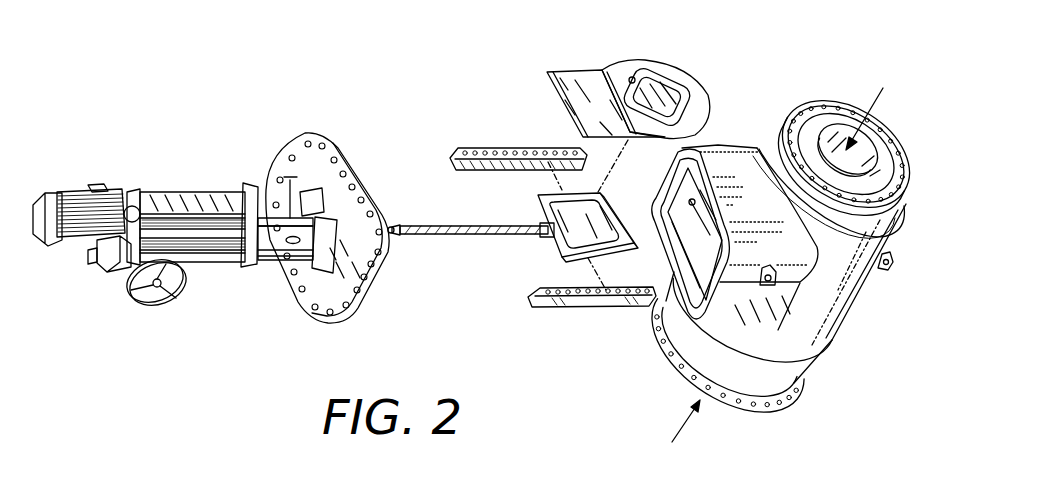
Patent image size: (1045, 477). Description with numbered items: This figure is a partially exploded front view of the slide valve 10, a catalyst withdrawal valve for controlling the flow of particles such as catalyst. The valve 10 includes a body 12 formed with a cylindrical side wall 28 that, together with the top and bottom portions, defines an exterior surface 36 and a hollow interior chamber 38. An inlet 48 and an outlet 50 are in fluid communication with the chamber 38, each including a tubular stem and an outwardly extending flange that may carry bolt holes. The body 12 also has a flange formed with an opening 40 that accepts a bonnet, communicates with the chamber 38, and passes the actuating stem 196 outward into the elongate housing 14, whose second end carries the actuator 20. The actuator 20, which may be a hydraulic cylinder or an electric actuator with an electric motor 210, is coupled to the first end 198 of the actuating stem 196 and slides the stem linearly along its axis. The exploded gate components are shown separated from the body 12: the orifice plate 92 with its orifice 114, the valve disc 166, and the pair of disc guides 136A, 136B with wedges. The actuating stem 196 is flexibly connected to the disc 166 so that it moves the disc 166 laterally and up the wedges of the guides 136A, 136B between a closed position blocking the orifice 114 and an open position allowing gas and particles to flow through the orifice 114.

The valve 10 is at (661, 242).
The body 12 is at (766, 262).
The elongate housing 14 is at (208, 268).
The actuator 20 is at (78, 190).
The cylindrical side wall 28 is at (852, 306).
The exterior surface 36 is at (847, 266).
The hollow interior chamber 38 is at (688, 262).
The opening 40 is at (692, 200).
The inlet 48 is at (822, 100).
The outlet 50 is at (750, 414).
The orifice plate 92 is at (600, 70).
The orifice 114 is at (660, 92).
The disc guide 136A is at (578, 318).
The disc guide 136B is at (500, 146).
The valve disc 166 is at (556, 245).
The actuating stem 196 is at (506, 223).
The first end 198 is at (392, 224).
The electric motor 210 is at (112, 272).